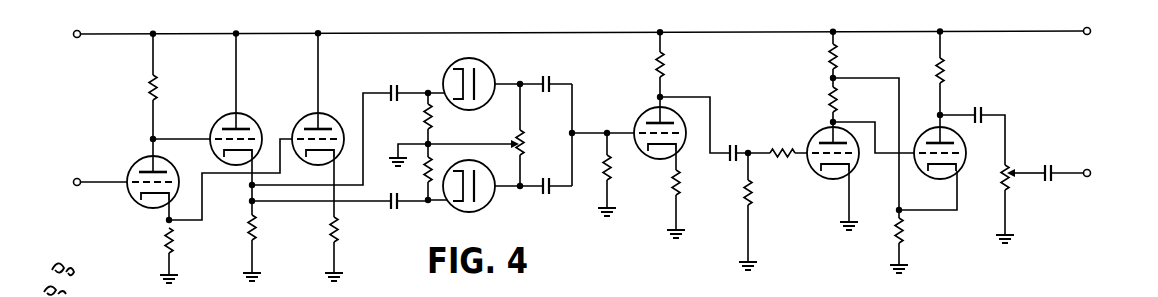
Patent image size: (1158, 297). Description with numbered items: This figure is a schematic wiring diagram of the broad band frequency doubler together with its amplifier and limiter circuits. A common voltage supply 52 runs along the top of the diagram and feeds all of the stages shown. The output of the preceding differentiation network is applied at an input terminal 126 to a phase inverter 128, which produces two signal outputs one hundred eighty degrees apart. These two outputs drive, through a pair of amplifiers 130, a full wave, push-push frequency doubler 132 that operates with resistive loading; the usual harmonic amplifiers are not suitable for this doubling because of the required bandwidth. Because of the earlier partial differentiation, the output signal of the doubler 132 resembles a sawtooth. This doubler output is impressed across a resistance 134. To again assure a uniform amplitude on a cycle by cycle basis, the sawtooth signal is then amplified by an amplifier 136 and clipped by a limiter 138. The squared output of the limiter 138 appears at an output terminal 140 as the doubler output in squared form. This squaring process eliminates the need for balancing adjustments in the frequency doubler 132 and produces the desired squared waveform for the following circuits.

The voltage supply 52 is at (491, 10).
The input terminal 126 is at (73, 182).
The phase inverter 128 is at (138, 156).
The amplifiers 130 is at (307, 111).
The full wave, push-push frequency doubler 132 is at (485, 130).
The resistance 134 is at (611, 164).
The amplifier 136 is at (700, 86).
The limiter 138 is at (890, 109).
The output terminal 140 is at (1100, 152).